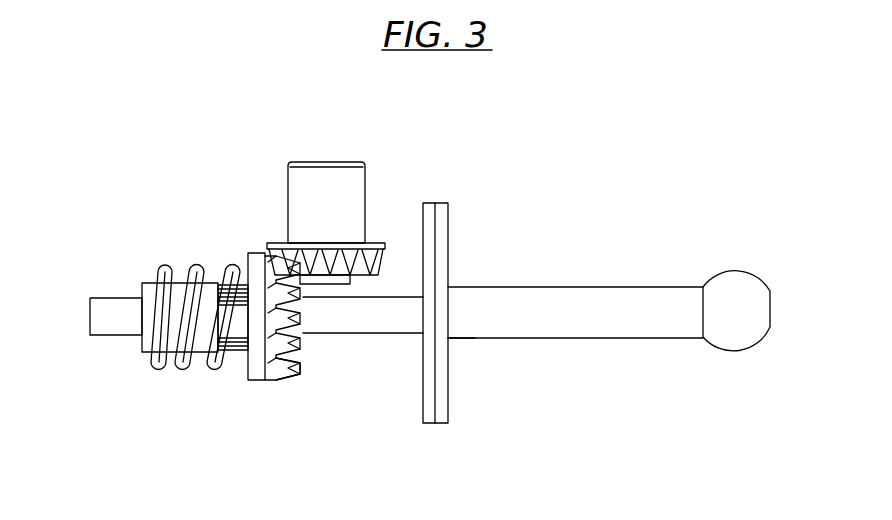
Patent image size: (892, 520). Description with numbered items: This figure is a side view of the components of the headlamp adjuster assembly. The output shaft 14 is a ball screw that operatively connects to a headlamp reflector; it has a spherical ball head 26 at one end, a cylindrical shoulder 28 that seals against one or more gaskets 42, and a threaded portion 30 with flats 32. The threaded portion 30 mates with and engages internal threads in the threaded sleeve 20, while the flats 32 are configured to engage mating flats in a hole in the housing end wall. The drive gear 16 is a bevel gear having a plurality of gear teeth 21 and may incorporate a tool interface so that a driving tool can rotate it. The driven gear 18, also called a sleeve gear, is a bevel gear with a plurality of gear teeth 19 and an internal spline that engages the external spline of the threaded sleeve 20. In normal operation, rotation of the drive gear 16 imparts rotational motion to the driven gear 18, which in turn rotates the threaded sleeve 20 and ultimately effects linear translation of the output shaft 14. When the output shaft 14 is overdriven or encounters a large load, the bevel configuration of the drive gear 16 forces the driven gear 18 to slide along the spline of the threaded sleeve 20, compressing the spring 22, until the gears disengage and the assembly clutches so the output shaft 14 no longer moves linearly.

The output shaft 14 is at (620, 287).
The drive gear 16 is at (352, 162).
The driven gear 18 is at (265, 246).
The gear teeth 19 is at (288, 368).
The threaded sleeve 20 is at (192, 370).
The gear teeth 21 is at (392, 283).
The spring 22 is at (160, 370).
The spherical ball head 26 is at (742, 348).
The cylindrical shoulder 28 is at (450, 345).
The threaded portion 30 is at (360, 333).
The flats 32 is at (90, 298).
The gaskets 42 is at (449, 221).